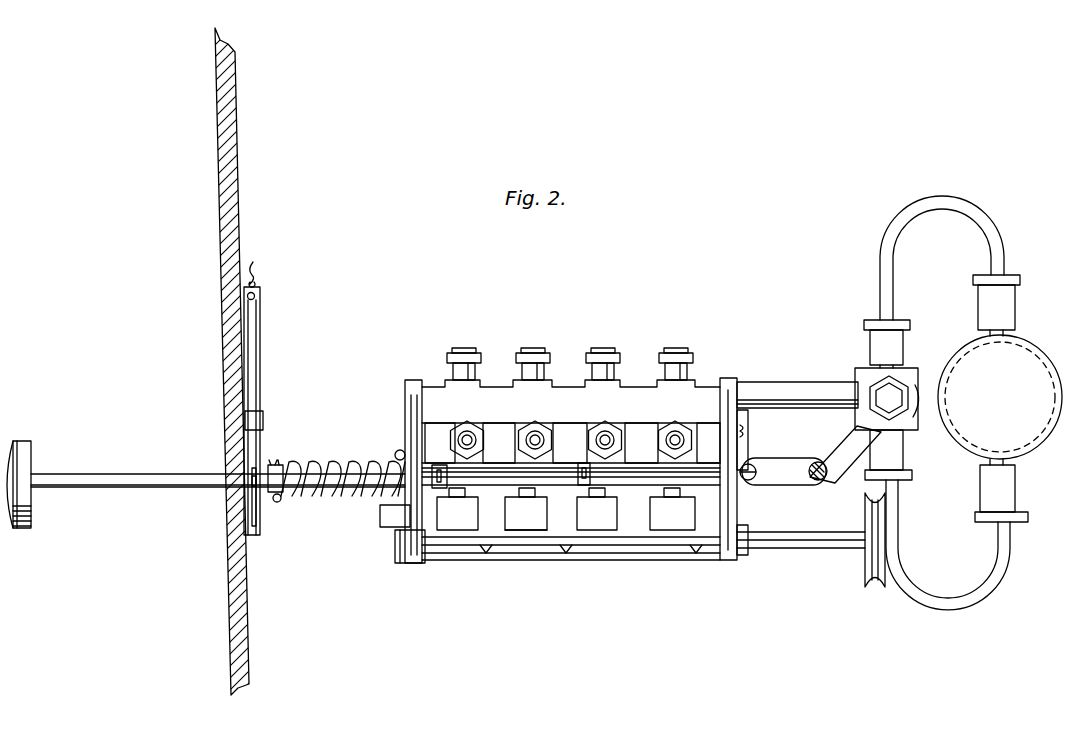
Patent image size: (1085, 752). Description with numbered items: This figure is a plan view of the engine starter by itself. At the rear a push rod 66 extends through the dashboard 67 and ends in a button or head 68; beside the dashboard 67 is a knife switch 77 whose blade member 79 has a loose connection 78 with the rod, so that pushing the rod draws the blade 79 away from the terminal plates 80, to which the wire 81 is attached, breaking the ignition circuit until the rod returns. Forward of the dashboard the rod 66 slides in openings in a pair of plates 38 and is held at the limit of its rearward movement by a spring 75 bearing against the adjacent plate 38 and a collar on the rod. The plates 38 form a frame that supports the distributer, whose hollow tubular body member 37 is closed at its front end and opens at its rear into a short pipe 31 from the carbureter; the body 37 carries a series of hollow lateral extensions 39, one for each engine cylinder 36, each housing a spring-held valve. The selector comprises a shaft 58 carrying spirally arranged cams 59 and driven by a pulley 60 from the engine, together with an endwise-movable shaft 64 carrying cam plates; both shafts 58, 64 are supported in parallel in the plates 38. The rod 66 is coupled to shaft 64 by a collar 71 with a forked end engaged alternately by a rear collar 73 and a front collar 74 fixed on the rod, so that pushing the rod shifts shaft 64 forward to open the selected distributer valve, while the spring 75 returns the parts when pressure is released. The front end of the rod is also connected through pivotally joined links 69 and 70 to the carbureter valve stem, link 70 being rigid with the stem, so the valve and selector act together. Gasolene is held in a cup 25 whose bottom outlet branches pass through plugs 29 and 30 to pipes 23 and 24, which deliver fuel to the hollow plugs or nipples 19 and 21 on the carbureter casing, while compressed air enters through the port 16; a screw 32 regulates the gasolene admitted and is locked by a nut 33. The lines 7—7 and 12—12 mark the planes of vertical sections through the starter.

The section line 7— 7 is at (652, 398).
The section line 12— 12 is at (603, 350).
The lower port 16 is at (281, 467).
The hollow plug 19 is at (906, 436).
The hollow plug 21 is at (901, 373).
The pipe 23 is at (984, 590).
The pipe 24 is at (898, 226).
The gasolene cup 25 is at (1026, 378).
The plug 29 is at (986, 470).
The plug 30 is at (989, 333).
The short pipe 31 is at (763, 381).
The screw 32 is at (885, 392).
The nut 33 is at (876, 400).
The engine cylinder 36 is at (742, 428).
The tubular body member 37 is at (694, 398).
The plates 38 is at (411, 407).
The hollow lateral extensions 39 is at (546, 425).
The shaft 58 is at (651, 548).
The cams 59 is at (485, 549).
The pulley 60 is at (868, 561).
The shaft 64 is at (392, 513).
The push rod 66 is at (130, 473).
The dashboard 67 is at (223, 357).
The button 68 is at (32, 456).
The link 69 is at (796, 476).
The link 70 is at (840, 448).
The collar 71 is at (566, 505).
The rear collar 73 is at (437, 470).
The front collar 74 is at (583, 464).
The spring 75 is at (318, 494).
The knife switch 77 is at (262, 347).
The loose connection 78 is at (250, 486).
The blade member 79 is at (256, 381).
The terminal plates 80 is at (263, 418).
The wire 81 is at (258, 270).